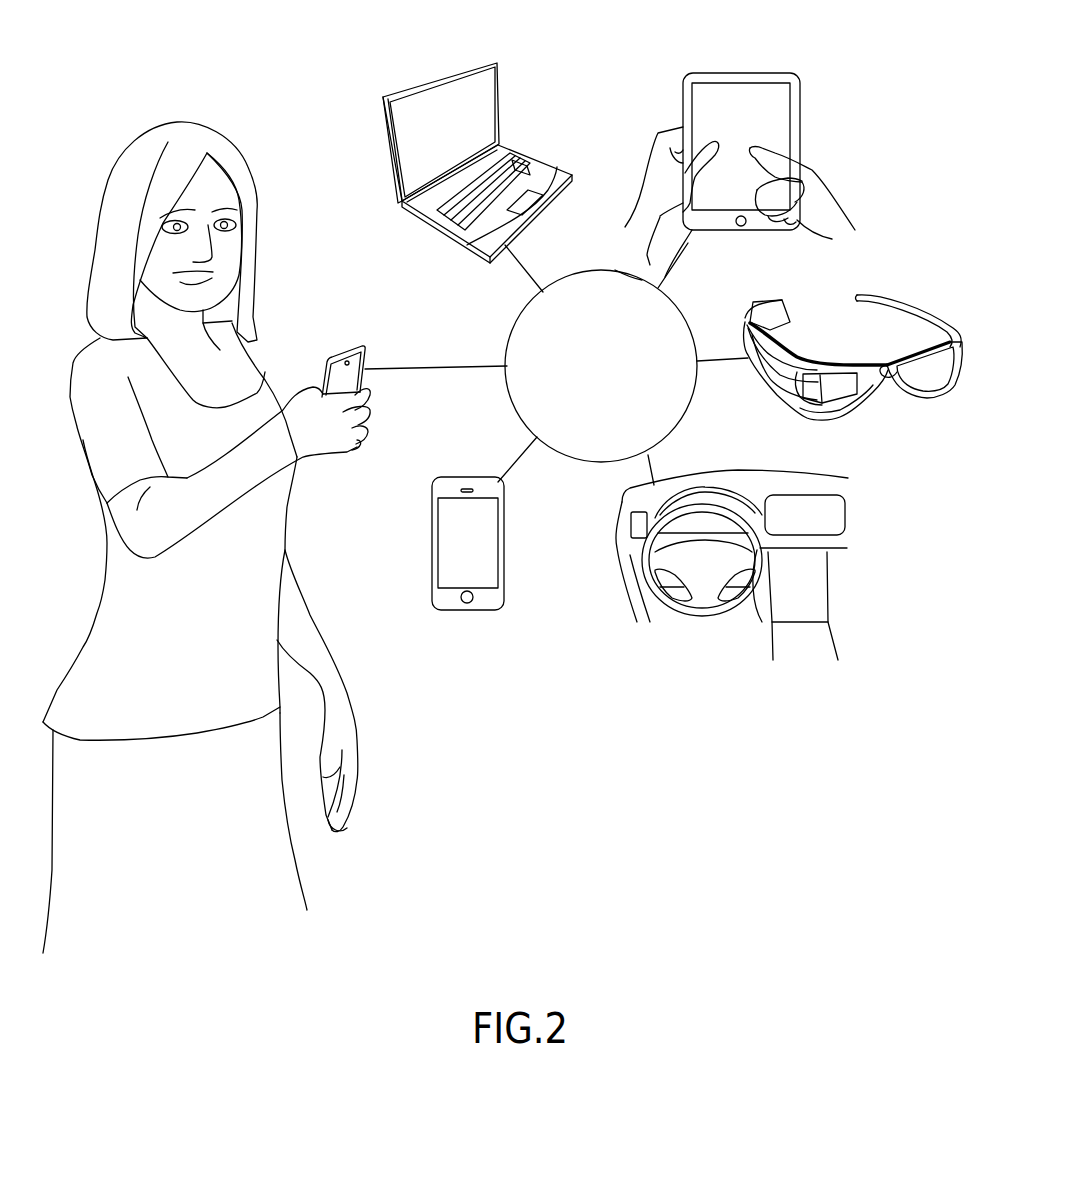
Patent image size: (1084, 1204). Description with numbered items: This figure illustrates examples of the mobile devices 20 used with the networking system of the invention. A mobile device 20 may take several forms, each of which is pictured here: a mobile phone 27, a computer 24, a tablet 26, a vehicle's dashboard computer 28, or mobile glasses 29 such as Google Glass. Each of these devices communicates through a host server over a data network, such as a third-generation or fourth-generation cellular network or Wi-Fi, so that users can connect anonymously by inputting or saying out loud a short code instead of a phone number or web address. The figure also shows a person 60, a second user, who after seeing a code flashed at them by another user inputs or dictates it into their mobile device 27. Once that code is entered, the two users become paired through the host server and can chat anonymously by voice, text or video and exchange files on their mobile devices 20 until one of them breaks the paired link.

The mobile device 20 is at (490, 389).
The computer 24 is at (500, 106).
The tablet 26 is at (747, 72).
The mobile phone 27 is at (505, 543).
The vehicle's dashboard computer 28 is at (850, 493).
The mobile glasses 29 is at (903, 297).
The person (user 2) 60 is at (207, 122).